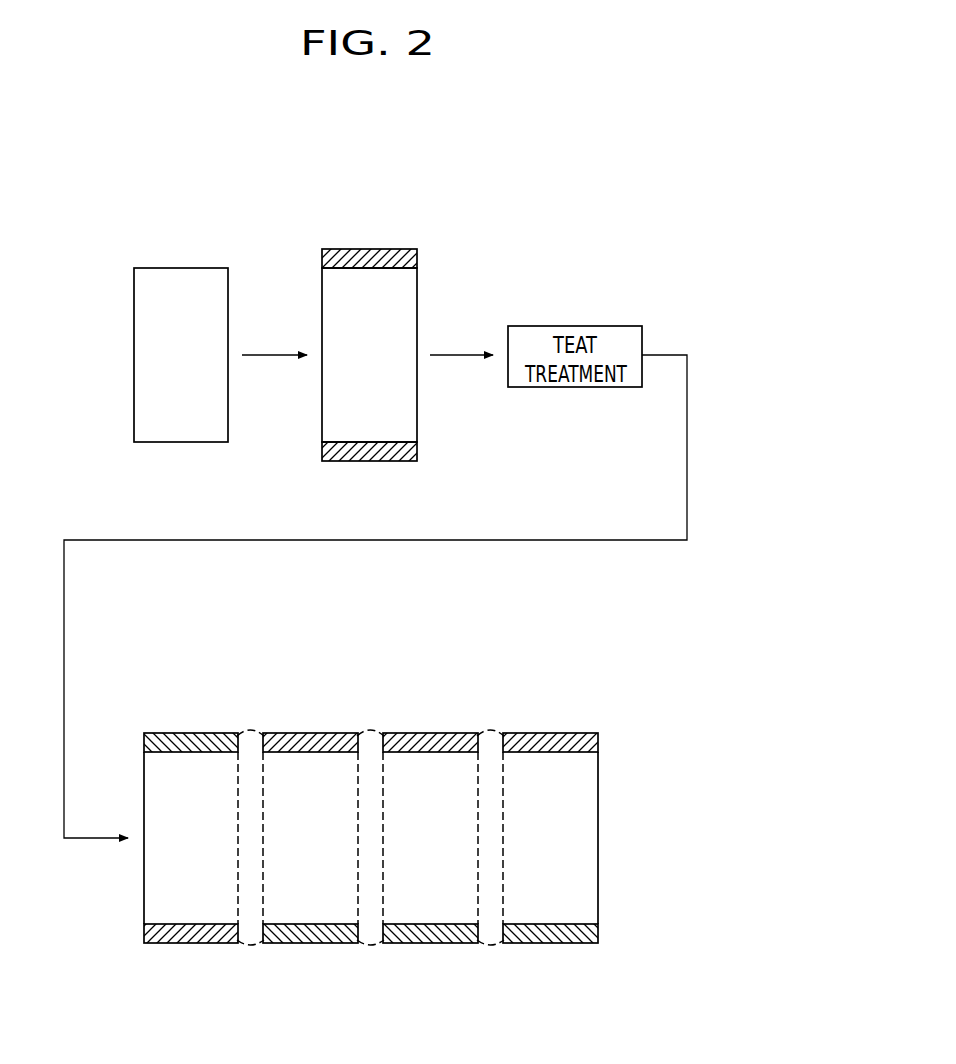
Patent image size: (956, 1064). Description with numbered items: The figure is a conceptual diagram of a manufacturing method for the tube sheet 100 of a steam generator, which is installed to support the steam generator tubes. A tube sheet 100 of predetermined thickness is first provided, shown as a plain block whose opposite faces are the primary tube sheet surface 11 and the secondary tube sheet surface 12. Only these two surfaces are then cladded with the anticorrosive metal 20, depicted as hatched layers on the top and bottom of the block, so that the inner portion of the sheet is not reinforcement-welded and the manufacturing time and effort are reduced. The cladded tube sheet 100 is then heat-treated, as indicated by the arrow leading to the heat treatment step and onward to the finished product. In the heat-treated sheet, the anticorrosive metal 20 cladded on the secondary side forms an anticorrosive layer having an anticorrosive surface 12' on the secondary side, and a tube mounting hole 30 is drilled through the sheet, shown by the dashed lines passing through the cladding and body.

The primary tube sheet surface 11 is at (180, 443).
The secondary tube sheet surface 12 is at (181, 355).
The anticorrosive surface 12' is at (371, 793).
The anticorrosive metal 20 is at (372, 262).
The tube mounting hole 30 is at (488, 728).
The tube sheet of a steam generator 100 is at (435, 250).